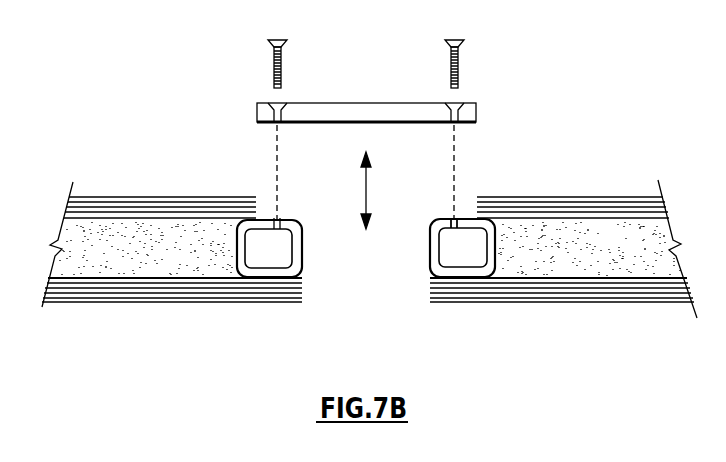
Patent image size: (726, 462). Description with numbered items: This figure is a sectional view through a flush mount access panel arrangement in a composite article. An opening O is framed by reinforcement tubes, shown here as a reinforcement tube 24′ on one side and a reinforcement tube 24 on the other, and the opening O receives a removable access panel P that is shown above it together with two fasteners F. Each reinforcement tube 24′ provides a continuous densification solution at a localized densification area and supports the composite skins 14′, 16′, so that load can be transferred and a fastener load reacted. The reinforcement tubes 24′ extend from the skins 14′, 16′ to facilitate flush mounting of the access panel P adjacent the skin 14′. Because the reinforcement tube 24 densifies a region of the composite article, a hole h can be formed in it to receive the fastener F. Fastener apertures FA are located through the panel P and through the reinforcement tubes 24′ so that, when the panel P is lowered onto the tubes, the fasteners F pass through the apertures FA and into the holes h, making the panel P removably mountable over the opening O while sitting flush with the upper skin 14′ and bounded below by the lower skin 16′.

The access panel P is at (345, 103).
The fastener F is at (273, 70).
The skin 14′ is at (135, 208).
The skin 16′ is at (123, 288).
The reinforcement tube 24′ is at (237, 248).
The reinforcement tube 24 is at (495, 248).
The hole h is at (279, 218).
The fastener aperture FA is at (462, 218).
The opening O is at (353, 272).